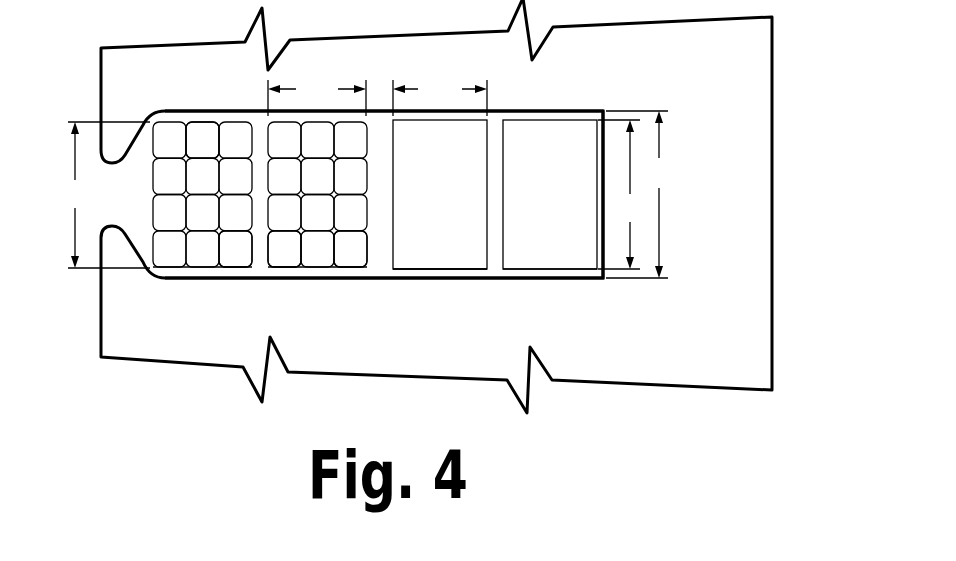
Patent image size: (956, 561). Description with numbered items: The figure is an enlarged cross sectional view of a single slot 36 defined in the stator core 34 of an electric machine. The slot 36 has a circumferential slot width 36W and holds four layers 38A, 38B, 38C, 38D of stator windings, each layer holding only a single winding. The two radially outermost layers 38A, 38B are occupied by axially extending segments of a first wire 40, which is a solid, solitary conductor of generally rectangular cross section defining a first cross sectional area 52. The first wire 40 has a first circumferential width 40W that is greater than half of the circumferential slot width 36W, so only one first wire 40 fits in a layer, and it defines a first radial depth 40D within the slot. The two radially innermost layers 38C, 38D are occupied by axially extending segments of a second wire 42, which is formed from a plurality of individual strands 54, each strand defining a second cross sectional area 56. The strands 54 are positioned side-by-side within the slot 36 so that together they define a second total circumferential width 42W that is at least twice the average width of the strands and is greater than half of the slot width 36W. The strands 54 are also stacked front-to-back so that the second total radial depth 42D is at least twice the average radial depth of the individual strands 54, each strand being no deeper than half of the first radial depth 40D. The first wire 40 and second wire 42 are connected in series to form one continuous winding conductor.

The stator core 34 is at (748, 218).
The slot 36 is at (168, 117).
The radially outermost layer 38A is at (580, 283).
The radially outer layer 38B is at (486, 284).
The radially inner layer 38C is at (272, 133).
The radially innermost layer 38D is at (172, 258).
The first wire 40 is at (535, 147).
The second wire 42 is at (208, 282).
The first cross sectional area 52 is at (437, 259).
The individual strand 54 is at (203, 133).
The second cross sectional area 56 is at (290, 260).
The second total circumferential width 42W is at (101, 195).
The second total radial depth 42D is at (317, 95).
The first circumferential width 40W is at (623, 194).
The first radial depth 40D is at (440, 95).
The circumferential slot width 36W is at (643, 194).